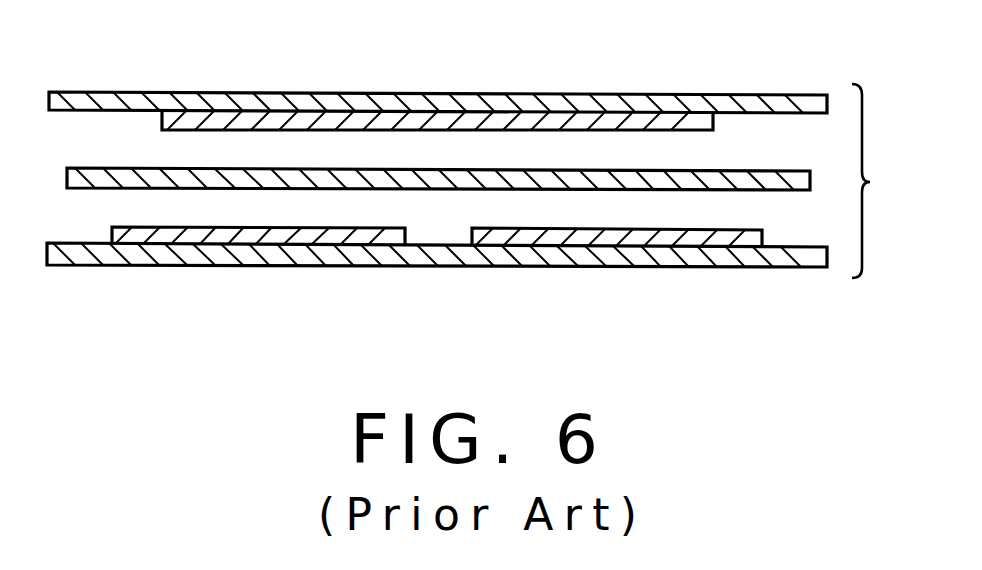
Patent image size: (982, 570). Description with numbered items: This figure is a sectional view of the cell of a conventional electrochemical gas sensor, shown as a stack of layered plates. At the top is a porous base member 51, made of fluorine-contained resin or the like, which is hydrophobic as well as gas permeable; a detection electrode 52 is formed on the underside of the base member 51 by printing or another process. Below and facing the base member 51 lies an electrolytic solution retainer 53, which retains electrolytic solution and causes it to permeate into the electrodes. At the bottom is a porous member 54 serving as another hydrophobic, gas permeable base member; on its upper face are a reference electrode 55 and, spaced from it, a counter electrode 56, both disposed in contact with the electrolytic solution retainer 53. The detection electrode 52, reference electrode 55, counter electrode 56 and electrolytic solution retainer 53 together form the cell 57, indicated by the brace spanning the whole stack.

The porous base member 51 is at (98, 99).
The detection electrode 52 is at (635, 120).
The electrolytic solution retainer 53 is at (777, 182).
The porous member 54 is at (330, 253).
The reference electrode 55 is at (158, 231).
The counter electrode 56 is at (527, 250).
The cell 57 is at (884, 181).